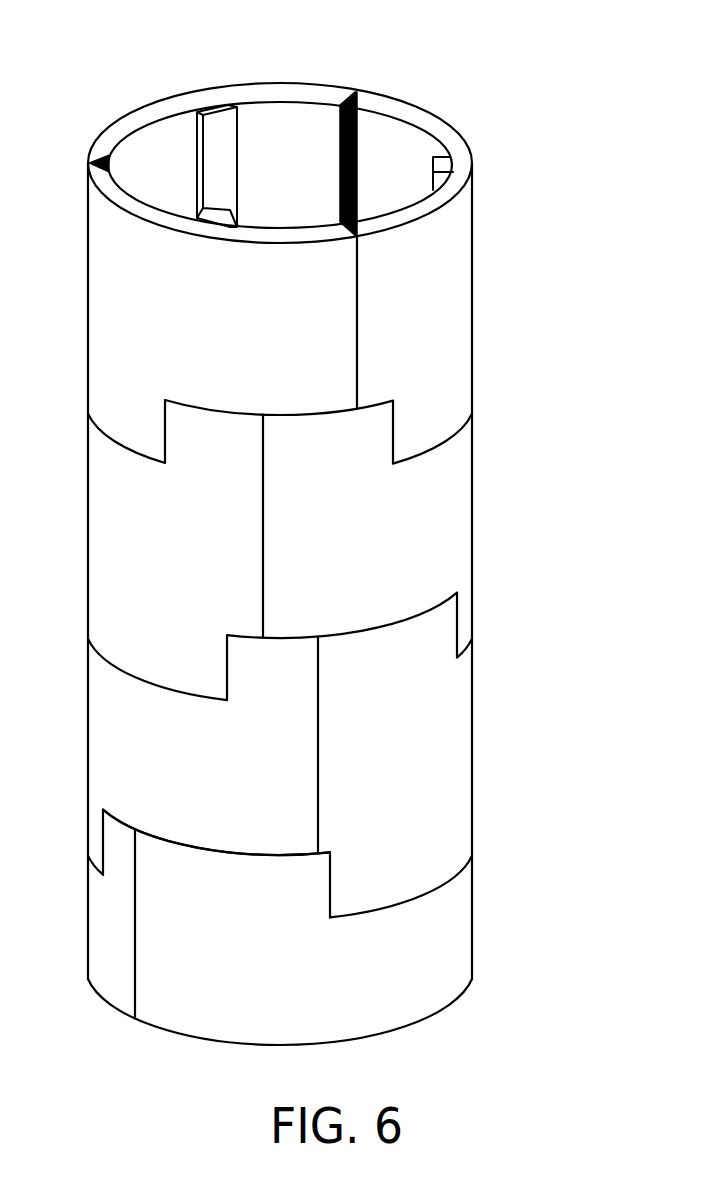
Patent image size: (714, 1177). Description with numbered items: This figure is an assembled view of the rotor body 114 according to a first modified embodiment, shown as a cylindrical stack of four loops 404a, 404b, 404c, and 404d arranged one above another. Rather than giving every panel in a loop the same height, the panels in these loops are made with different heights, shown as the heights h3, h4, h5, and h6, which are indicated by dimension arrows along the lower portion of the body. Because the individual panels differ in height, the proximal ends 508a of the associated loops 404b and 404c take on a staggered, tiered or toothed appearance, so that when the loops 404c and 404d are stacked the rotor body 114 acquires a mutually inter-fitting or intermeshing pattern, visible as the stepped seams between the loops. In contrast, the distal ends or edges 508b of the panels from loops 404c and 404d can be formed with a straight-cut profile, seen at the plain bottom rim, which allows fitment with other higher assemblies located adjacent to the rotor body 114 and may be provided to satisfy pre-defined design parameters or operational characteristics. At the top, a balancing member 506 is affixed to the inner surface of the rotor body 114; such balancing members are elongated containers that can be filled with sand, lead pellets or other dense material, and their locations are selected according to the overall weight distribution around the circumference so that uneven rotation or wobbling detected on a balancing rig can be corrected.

The rotor body 114 is at (530, 90).
The loop 404a is at (455, 877).
The loop 404b is at (448, 767).
The loop 404c is at (442, 525).
The loop 404d is at (442, 328).
The balancing member 506 is at (215, 125).
The proximal end 508a is at (290, 880).
The distal end 508b is at (400, 1028).
The height h3 is at (195, 847).
The height h4 is at (73, 857).
The height h5 is at (373, 629).
The height h6 is at (178, 830).